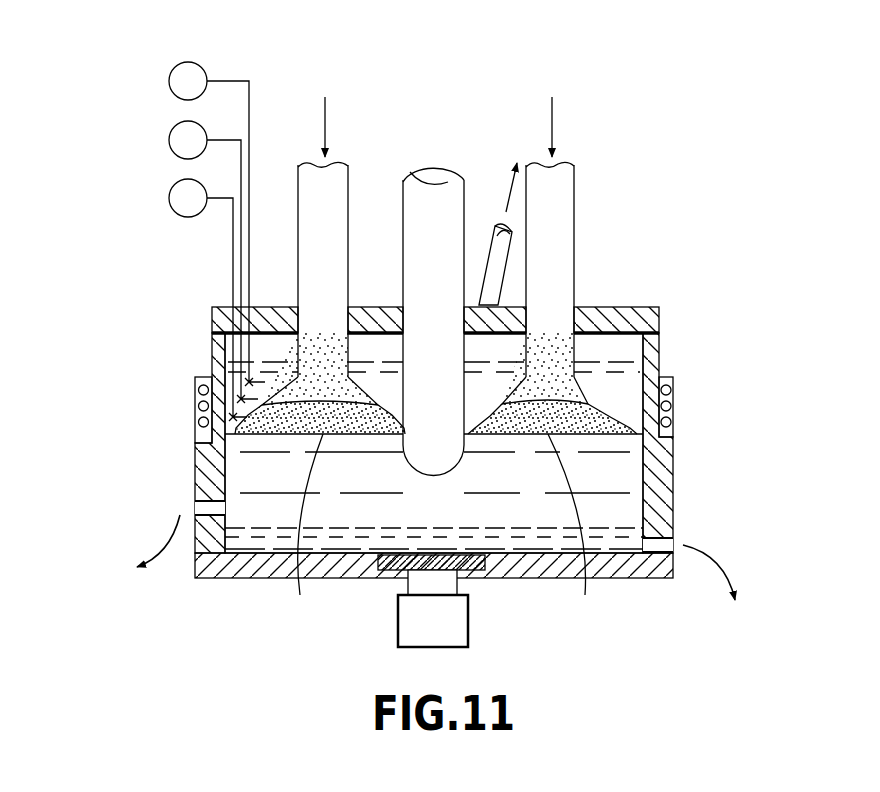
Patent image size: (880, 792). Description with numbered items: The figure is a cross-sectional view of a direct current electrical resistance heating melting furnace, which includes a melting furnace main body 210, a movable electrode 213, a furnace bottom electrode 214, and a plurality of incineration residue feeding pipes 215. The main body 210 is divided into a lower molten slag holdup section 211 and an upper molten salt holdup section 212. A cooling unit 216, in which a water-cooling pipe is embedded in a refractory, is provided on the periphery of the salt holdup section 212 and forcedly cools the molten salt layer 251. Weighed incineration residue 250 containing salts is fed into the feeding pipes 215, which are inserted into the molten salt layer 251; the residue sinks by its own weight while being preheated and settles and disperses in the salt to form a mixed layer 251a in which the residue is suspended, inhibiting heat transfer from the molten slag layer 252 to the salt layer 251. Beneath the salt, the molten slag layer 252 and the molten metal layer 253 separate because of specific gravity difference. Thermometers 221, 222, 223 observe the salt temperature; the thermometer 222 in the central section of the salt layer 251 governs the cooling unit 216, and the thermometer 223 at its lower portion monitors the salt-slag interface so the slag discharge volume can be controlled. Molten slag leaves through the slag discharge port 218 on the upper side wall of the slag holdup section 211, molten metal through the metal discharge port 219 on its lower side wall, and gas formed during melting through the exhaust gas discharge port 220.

The melting furnace main body 210 is at (182, 405).
The molten slag holdup section 211 is at (196, 483).
The molten salt holdup section 212 is at (212, 353).
The movable electrode 213 is at (432, 182).
The furnace bottom electrode 214 is at (377, 572).
The incineration residue feeding pipes 215 is at (298, 187).
The cooling unit 216 is at (195, 407).
The slag discharge port 218 is at (205, 510).
The metal discharge port 219 is at (675, 545).
The exhaust gas discharge port 220 is at (500, 242).
The thermometer 221 is at (174, 67).
The thermometer 222 is at (174, 126).
The thermometer 223 is at (174, 184).
The incineration residue 250 is at (328, 350).
The molten salt layer 251 is at (280, 382).
The mixed layer 251a is at (448, 528).
The molten slag layer 252 is at (395, 485).
The molten metal layer 253 is at (540, 540).